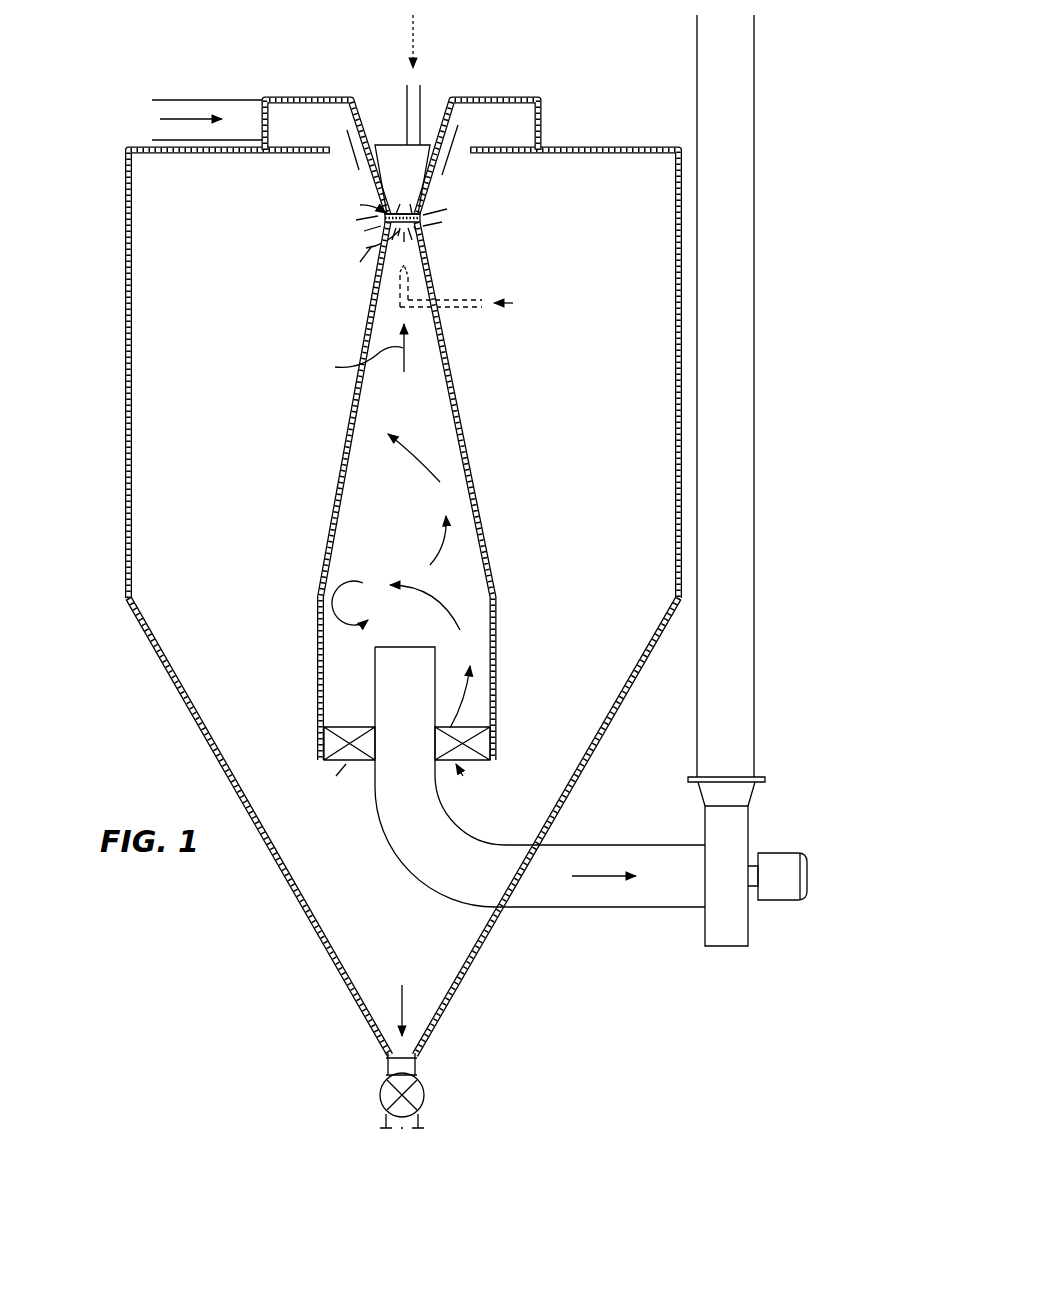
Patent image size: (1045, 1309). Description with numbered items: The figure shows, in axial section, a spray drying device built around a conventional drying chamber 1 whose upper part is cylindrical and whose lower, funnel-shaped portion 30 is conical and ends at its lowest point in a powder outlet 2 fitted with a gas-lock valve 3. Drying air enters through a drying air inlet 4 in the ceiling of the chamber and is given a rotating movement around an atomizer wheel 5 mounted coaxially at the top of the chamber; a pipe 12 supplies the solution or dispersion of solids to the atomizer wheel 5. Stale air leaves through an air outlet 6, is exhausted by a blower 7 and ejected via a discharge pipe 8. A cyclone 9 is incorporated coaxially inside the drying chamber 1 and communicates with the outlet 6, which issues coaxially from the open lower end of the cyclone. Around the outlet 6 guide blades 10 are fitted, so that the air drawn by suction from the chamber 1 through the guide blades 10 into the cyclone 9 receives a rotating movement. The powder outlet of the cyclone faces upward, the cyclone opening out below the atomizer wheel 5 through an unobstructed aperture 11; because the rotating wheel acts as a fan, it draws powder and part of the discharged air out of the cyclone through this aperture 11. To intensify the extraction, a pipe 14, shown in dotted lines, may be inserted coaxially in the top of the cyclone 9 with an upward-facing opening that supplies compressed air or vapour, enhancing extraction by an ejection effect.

The drying chamber 1 is at (124, 432).
The powder outlet 2 is at (408, 1067).
The gas-lock valve 3 is at (418, 1099).
The drying air inlet 4 is at (161, 102).
The atomizer wheel 5 is at (393, 216).
The air outlet 6 is at (563, 896).
The blower 7 is at (712, 935).
The discharge pipe 8 is at (700, 729).
The cyclone 9 is at (466, 488).
The guide blades 10 is at (480, 742).
The aperture 11 is at (378, 253).
The pipe 12 is at (422, 96).
The pipe 14 is at (440, 300).
The funnel-shaped portion 30 is at (313, 928).